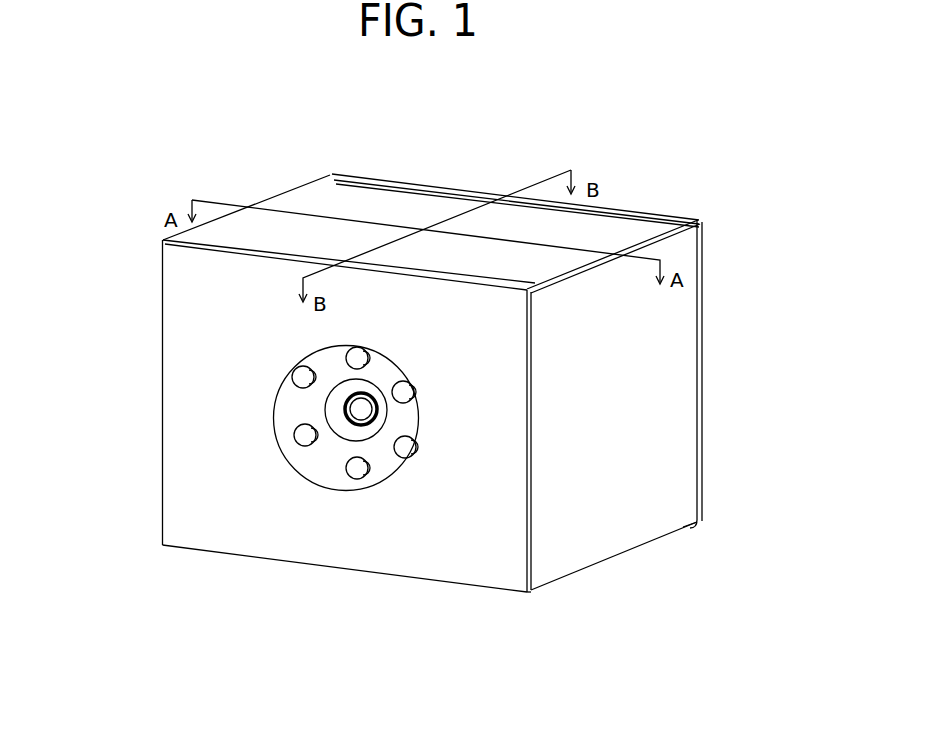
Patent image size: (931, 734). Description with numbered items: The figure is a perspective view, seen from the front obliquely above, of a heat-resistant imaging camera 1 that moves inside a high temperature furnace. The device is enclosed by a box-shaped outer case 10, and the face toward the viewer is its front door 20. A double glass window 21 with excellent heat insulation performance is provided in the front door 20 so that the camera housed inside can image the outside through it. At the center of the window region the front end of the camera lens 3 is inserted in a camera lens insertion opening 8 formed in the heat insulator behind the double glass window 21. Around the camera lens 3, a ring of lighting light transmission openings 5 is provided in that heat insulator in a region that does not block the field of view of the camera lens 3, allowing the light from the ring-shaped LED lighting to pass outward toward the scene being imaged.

The heat-resistant imaging camera 1 is at (380, 162).
The camera lens 3 is at (363, 407).
The lighting light transmission openings 5 is at (298, 375).
The camera lens insertion opening 8 is at (367, 442).
The outer case 10 is at (627, 378).
The front door 20 is at (190, 485).
The double glass window 21 is at (283, 398).